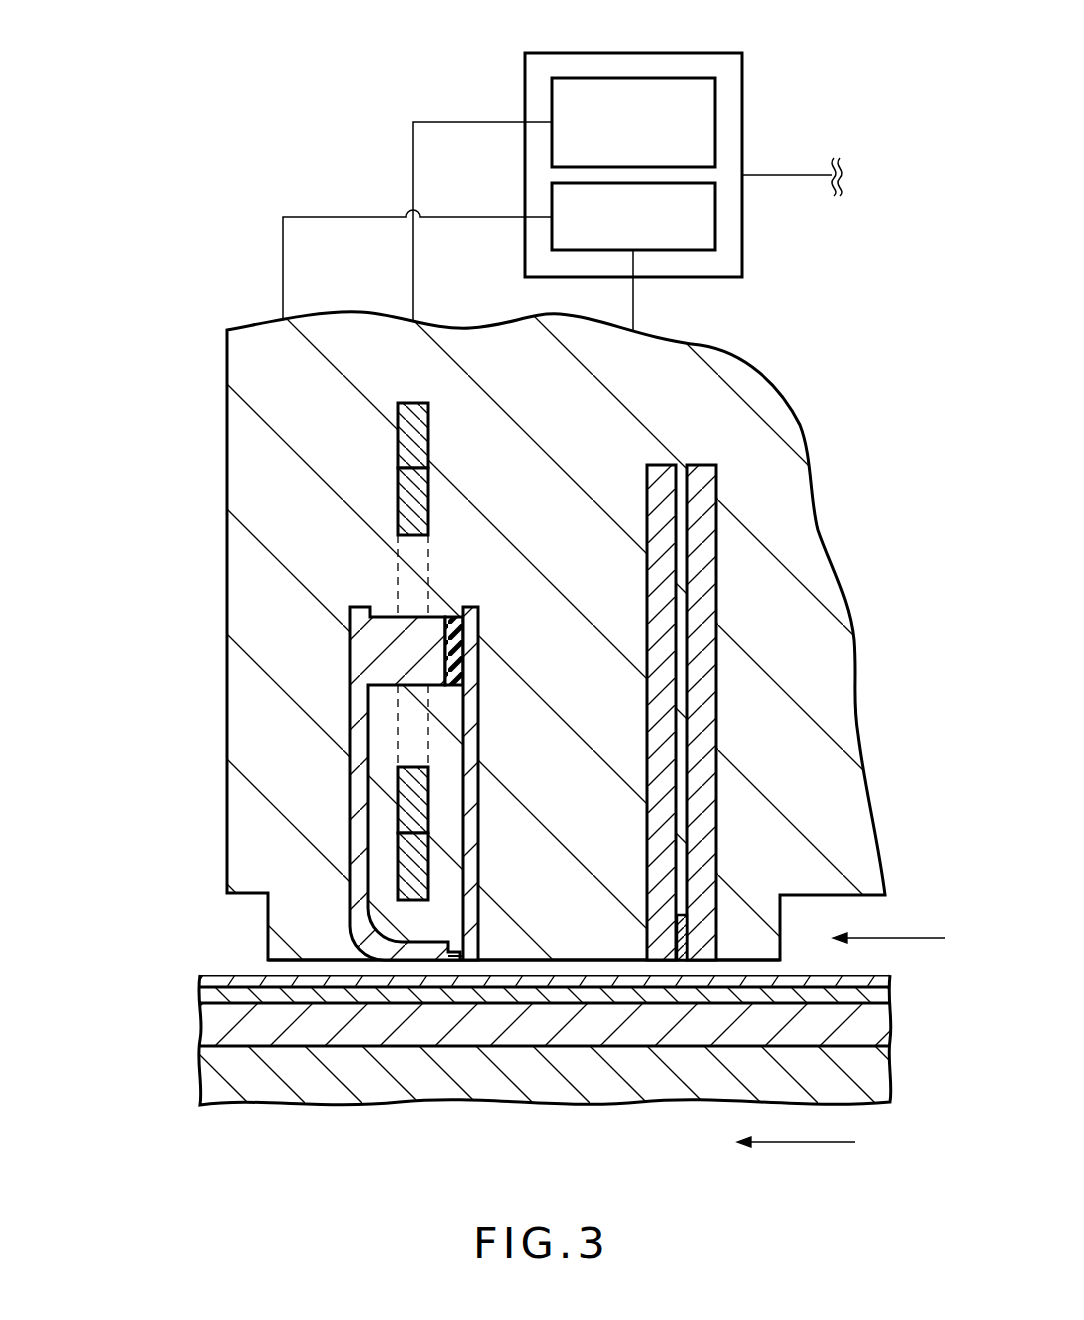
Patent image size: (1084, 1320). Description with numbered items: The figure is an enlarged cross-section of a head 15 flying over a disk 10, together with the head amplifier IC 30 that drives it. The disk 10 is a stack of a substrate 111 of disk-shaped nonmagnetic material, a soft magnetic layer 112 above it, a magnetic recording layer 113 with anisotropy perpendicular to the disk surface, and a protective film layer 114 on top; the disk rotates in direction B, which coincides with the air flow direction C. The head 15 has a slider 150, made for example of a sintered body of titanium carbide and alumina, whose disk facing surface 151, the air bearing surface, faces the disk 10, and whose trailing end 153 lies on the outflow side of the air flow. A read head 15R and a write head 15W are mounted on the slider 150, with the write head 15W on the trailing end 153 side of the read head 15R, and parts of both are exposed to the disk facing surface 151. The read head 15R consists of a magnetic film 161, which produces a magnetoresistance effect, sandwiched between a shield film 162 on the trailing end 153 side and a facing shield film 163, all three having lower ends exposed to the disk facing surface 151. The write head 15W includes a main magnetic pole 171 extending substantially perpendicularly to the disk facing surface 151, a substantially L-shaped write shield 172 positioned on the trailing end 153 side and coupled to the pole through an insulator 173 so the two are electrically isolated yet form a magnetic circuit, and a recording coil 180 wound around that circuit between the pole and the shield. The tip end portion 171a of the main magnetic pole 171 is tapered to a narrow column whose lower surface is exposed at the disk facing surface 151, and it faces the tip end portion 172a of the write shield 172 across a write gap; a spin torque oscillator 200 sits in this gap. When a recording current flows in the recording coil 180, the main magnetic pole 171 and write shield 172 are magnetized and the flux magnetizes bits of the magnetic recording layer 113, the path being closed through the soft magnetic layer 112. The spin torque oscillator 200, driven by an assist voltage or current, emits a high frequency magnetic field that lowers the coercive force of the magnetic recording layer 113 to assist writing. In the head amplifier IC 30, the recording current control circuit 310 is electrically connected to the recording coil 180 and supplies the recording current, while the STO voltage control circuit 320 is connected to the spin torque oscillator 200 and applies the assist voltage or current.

The head amplifier IC 30 is at (665, 53).
The recording current control circuit 310 is at (715, 115).
The STO voltage control circuit 320 is at (715, 210).
The head 15 is at (125, 586).
The slider 150 is at (773, 421).
The disk facing surface 151 is at (753, 962).
The trailing end 153 is at (227, 548).
The write head 15W is at (488, 400).
The read head 15R is at (730, 588).
The main magnetic pole 171 is at (478, 820).
The write shield 172 is at (347, 762).
The insulator 173 is at (450, 665).
The recording coil 180 is at (398, 503).
The tip end portion of the main magnetic pole 171a is at (470, 955).
The tip end portion of the write shield 172a is at (372, 942).
The spin torque oscillator 200 is at (455, 960).
The magnetic film 161 is at (680, 932).
The shield film 162 is at (663, 704).
The shield film 163 is at (702, 667).
The disk 10 is at (98, 995).
The substrate 111 is at (545, 1078).
The soft magnetic layer 112 is at (545, 1024).
The magnetic recording layer 113 is at (545, 995).
The protective film layer 114 is at (545, 981).